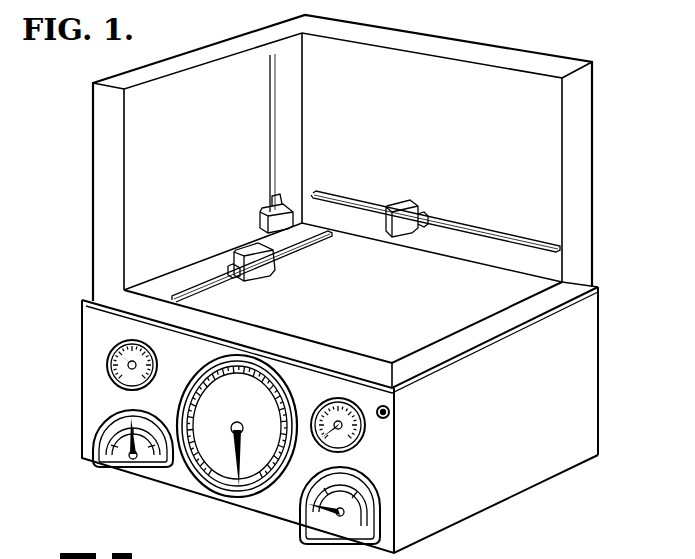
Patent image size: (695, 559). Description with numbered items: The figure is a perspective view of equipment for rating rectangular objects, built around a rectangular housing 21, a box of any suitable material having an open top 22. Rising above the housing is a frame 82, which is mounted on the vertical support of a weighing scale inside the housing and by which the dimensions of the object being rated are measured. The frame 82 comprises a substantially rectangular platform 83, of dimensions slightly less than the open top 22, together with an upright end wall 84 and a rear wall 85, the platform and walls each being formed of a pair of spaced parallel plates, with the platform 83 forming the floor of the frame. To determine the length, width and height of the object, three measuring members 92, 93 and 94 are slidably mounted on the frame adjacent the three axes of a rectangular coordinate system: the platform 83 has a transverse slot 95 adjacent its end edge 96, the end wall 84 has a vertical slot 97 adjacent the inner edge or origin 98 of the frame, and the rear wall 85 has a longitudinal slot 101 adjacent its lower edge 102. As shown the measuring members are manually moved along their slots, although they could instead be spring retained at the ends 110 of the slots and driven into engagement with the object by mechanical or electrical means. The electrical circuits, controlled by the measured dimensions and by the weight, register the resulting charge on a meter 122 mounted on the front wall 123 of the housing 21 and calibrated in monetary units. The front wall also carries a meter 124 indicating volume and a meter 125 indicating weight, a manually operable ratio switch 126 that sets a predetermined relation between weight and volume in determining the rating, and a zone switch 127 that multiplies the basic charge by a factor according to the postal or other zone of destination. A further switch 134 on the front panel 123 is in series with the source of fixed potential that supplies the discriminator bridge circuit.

The rectangular housing 21 is at (584, 357).
The open top 22 is at (446, 368).
The frame 82 is at (598, 148).
The platform 83 is at (492, 311).
The end wall 84 is at (148, 133).
The rear wall 85 is at (545, 115).
The measuring member 92 is at (397, 238).
The measuring member 93 is at (273, 271).
The measuring member 94 is at (291, 238).
The transverse slot 95 is at (207, 286).
The end edge 96 is at (185, 264).
The vertical slot 97 is at (272, 98).
The inner edge or origin 98 is at (305, 82).
The longitudinal slot 101 is at (510, 232).
The lower edge 102 is at (476, 264).
The ends of slots 110 is at (278, 56).
The meter 122 is at (270, 366).
The front wall 123 is at (380, 455).
The meter indicating volume 124 is at (107, 357).
The meter indicating weight 125 is at (366, 430).
The ratio switch 126 is at (96, 435).
The zone switch 127 is at (372, 500).
The switch 134 is at (392, 409).